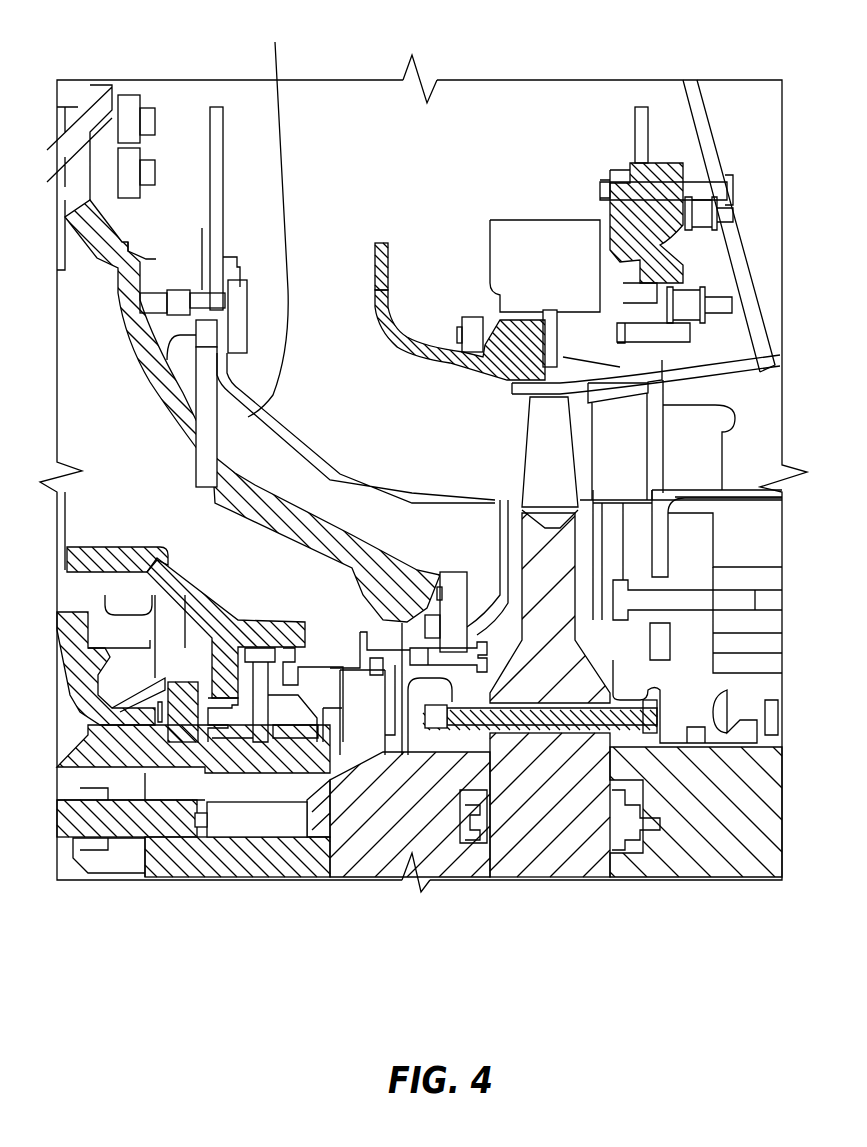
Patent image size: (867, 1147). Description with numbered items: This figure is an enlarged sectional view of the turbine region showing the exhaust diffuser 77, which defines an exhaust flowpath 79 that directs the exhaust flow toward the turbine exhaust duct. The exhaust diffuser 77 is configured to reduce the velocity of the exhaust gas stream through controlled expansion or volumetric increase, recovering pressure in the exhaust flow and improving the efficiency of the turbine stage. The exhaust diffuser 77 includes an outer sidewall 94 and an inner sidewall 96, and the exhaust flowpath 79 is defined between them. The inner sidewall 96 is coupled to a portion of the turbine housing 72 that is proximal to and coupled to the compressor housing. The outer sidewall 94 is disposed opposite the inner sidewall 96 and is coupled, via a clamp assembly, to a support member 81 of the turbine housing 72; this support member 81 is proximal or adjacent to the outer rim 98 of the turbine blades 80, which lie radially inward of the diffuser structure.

The turbine housing 72 is at (208, 328).
The inner sidewall 96 is at (268, 218).
The exhaust flowpath 79 is at (340, 330).
The outer sidewall 94 is at (382, 243).
The exhaust diffuser 77 is at (392, 284).
The support member 81 is at (645, 244).
The outer rim 98 is at (560, 400).
The turbine blades 80 is at (550, 473).